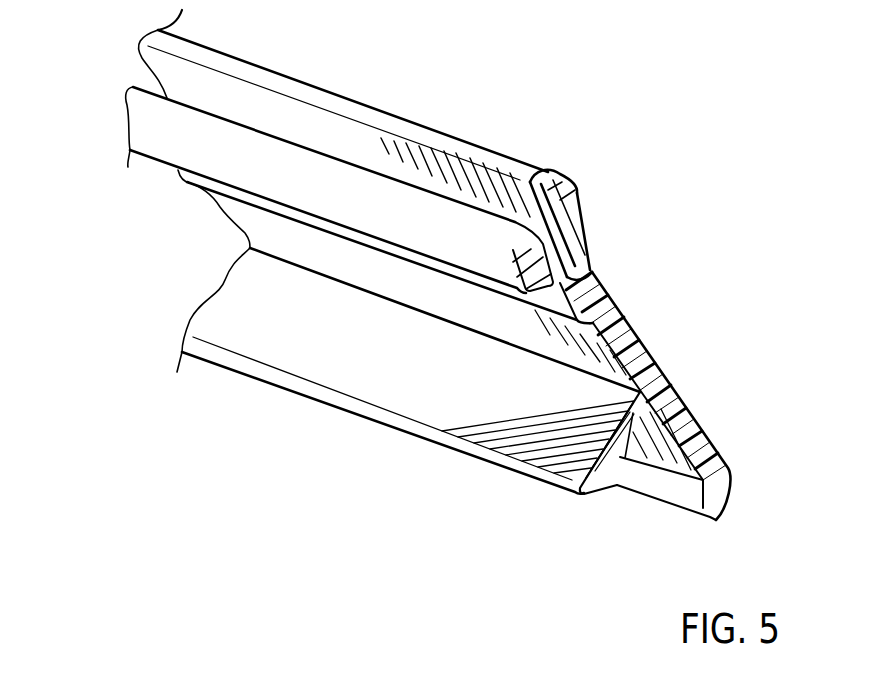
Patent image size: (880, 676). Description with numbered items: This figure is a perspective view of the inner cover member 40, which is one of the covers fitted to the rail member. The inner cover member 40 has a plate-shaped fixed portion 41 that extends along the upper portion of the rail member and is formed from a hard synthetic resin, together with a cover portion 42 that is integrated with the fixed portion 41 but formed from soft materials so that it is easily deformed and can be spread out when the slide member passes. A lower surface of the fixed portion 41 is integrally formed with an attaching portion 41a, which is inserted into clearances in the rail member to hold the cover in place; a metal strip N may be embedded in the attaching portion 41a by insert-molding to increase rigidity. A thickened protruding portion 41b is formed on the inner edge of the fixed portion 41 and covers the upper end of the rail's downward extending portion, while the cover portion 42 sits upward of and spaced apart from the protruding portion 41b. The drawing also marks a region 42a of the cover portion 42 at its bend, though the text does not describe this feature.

The inner cover member 40 is at (708, 223).
The fixed portion 41 is at (638, 342).
The attaching portion 41a is at (606, 492).
The protruding portion 41b is at (508, 190).
The cover portion 42 is at (565, 180).
The bent portion 42a is at (590, 273).
The metal strip N is at (665, 386).